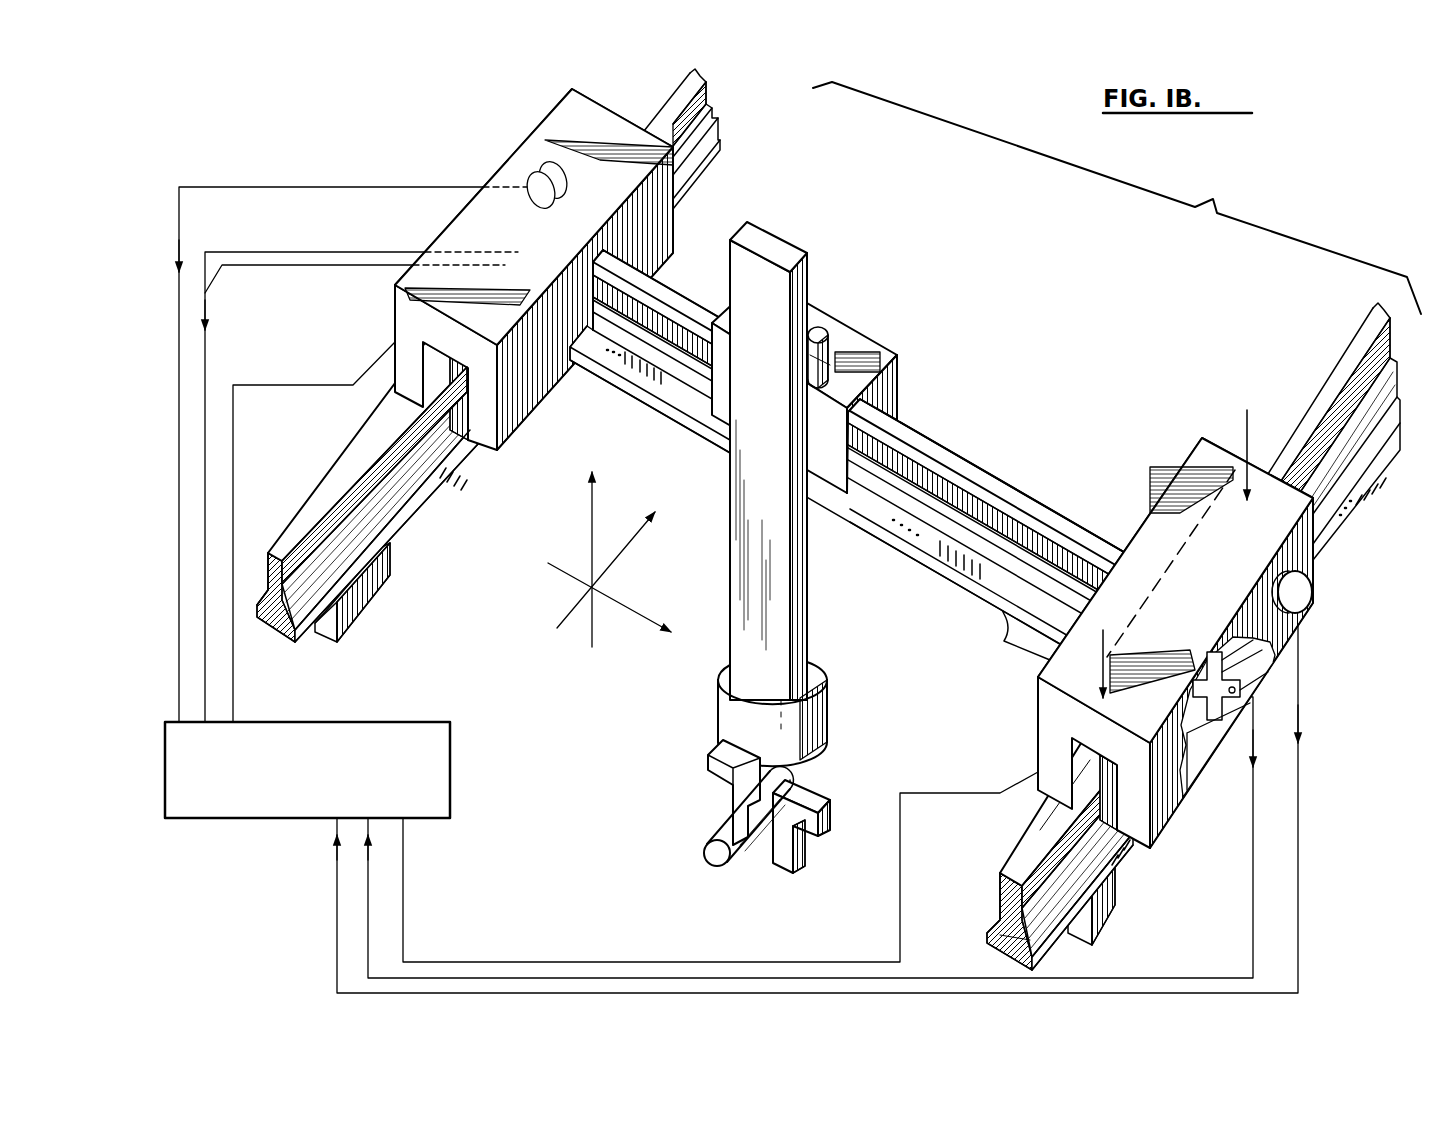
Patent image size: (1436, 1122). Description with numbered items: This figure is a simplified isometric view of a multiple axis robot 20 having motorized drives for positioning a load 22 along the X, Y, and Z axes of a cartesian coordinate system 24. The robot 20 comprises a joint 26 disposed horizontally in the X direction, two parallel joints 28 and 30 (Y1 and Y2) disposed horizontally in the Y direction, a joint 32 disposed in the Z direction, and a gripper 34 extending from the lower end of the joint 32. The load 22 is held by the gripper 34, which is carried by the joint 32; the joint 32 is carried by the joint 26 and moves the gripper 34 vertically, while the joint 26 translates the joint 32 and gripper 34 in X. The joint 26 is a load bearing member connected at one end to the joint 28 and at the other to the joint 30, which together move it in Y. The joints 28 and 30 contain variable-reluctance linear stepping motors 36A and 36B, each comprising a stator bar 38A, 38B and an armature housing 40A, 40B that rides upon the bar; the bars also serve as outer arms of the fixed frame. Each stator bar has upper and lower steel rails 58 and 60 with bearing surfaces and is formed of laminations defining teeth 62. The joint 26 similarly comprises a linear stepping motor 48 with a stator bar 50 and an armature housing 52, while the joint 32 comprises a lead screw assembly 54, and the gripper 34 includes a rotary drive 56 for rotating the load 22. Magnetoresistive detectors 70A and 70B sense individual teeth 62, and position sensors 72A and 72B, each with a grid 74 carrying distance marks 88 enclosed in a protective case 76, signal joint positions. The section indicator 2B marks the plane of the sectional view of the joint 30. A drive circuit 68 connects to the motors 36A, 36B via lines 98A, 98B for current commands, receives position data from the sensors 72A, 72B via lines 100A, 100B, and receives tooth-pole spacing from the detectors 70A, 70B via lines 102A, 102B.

The multiple axis robot 20 is at (1117, 198).
The load 22 is at (725, 855).
The cartesian coordinate system 24 is at (592, 522).
The X-axis joint 26 is at (985, 450).
The Y1 joint 28 is at (488, 158).
The Y2 joint 30 is at (1343, 325).
The Z-axis joint 32 is at (812, 665).
The gripper 34 is at (786, 862).
The variable-reluctance linear stepping motor 36A is at (605, 95).
The variable-reluctance linear stepping motor 36B is at (1216, 436).
The stator bar 38A is at (372, 446).
The stator bar 38B is at (1040, 835).
The armature housing 40A is at (542, 396).
The armature housing 40B is at (1043, 697).
The linear stepping motor 48 is at (908, 386).
The stator bar 50 is at (1052, 510).
The armature housing 52 is at (883, 348).
The lead screw assembly 54 is at (835, 341).
The rotary drive 56 is at (828, 722).
The upper steel rail 58 is at (1020, 865).
The lower steel rail 60 is at (1003, 910).
The teeth 62 is at (340, 510).
The drive circuit 68 is at (450, 730).
The magnetoresistive detector 70A is at (543, 160).
The magnetoresistive detector 70B is at (1318, 596).
The position sensor 72A is at (520, 247).
The position sensor 72B is at (1228, 720).
The grid 74 is at (405, 530).
The protective case 76 is at (368, 588).
The distance marks 88 is at (450, 478).
The line 98A is at (233, 680).
The line 98B is at (403, 857).
The line 100A is at (207, 353).
The line 100B is at (1253, 857).
The line 102A is at (179, 213).
The line 102B is at (1300, 665).
The section line 2B- 2B is at (1182, 542).